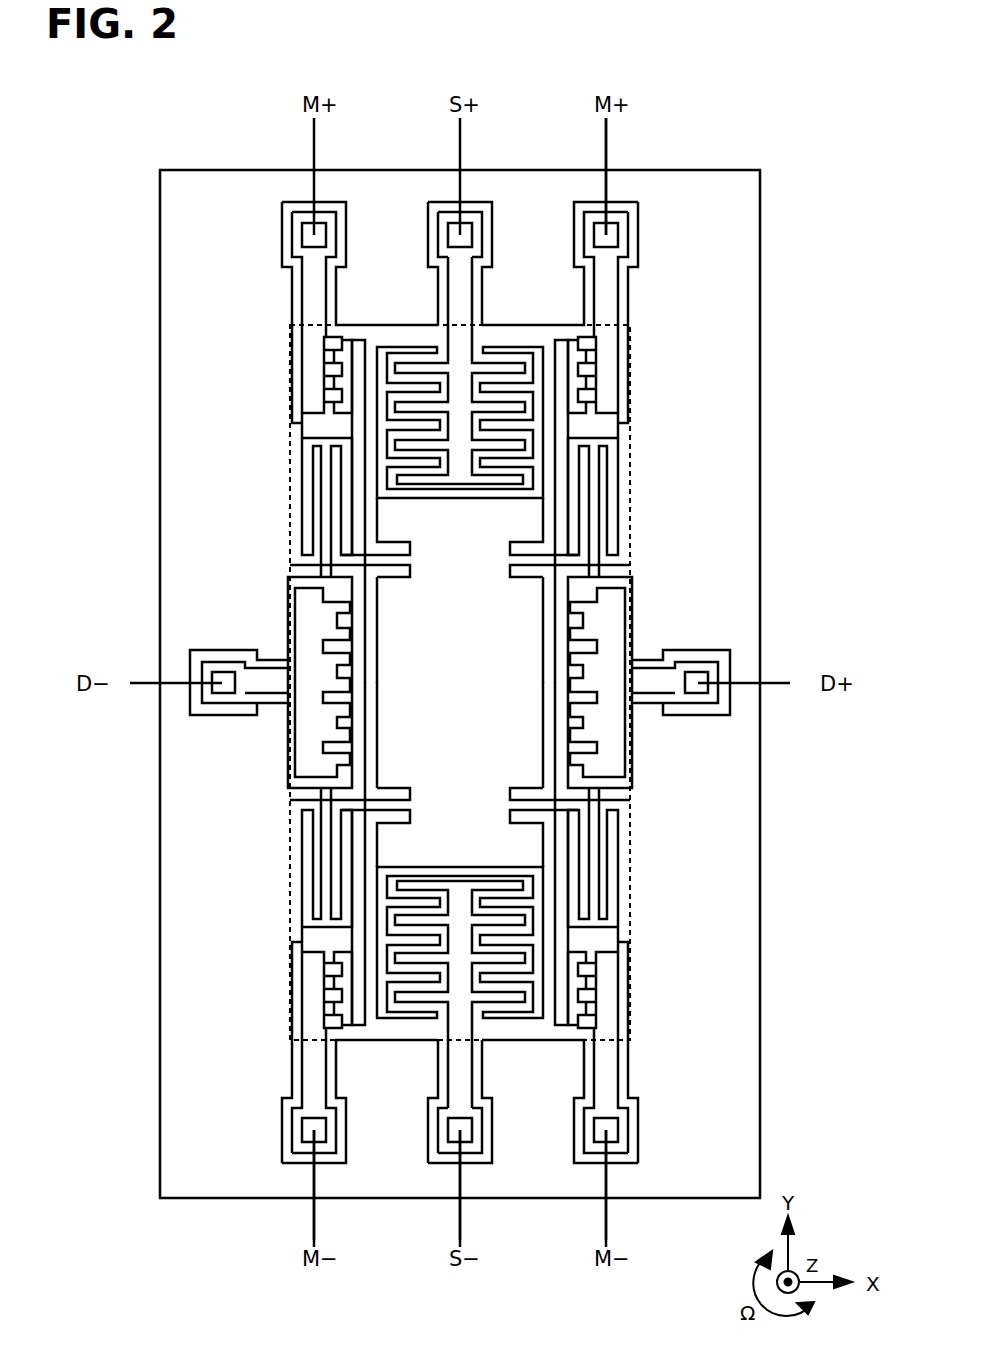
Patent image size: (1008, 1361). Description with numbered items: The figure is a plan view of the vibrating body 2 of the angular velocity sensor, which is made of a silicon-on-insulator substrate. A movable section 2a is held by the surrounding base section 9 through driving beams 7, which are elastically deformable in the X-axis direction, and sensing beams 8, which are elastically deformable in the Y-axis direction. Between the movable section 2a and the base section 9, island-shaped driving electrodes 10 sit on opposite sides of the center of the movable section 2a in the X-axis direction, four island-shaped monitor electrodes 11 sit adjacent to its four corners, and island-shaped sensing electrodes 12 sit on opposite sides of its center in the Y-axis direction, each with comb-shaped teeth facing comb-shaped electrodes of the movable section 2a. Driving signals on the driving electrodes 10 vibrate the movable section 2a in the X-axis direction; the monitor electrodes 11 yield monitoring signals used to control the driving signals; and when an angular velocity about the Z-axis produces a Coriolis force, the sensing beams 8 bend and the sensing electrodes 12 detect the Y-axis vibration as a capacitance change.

The vibrating body 2 is at (722, 169).
The movable section 2a is at (527, 747).
The driving beam 7 is at (316, 458).
The sensing beam 8 is at (372, 562).
The base section 9 is at (220, 197).
The driving electrode 10 is at (305, 620).
The monitor electrode 11 is at (313, 286).
The sensing electrode 12 is at (463, 296).